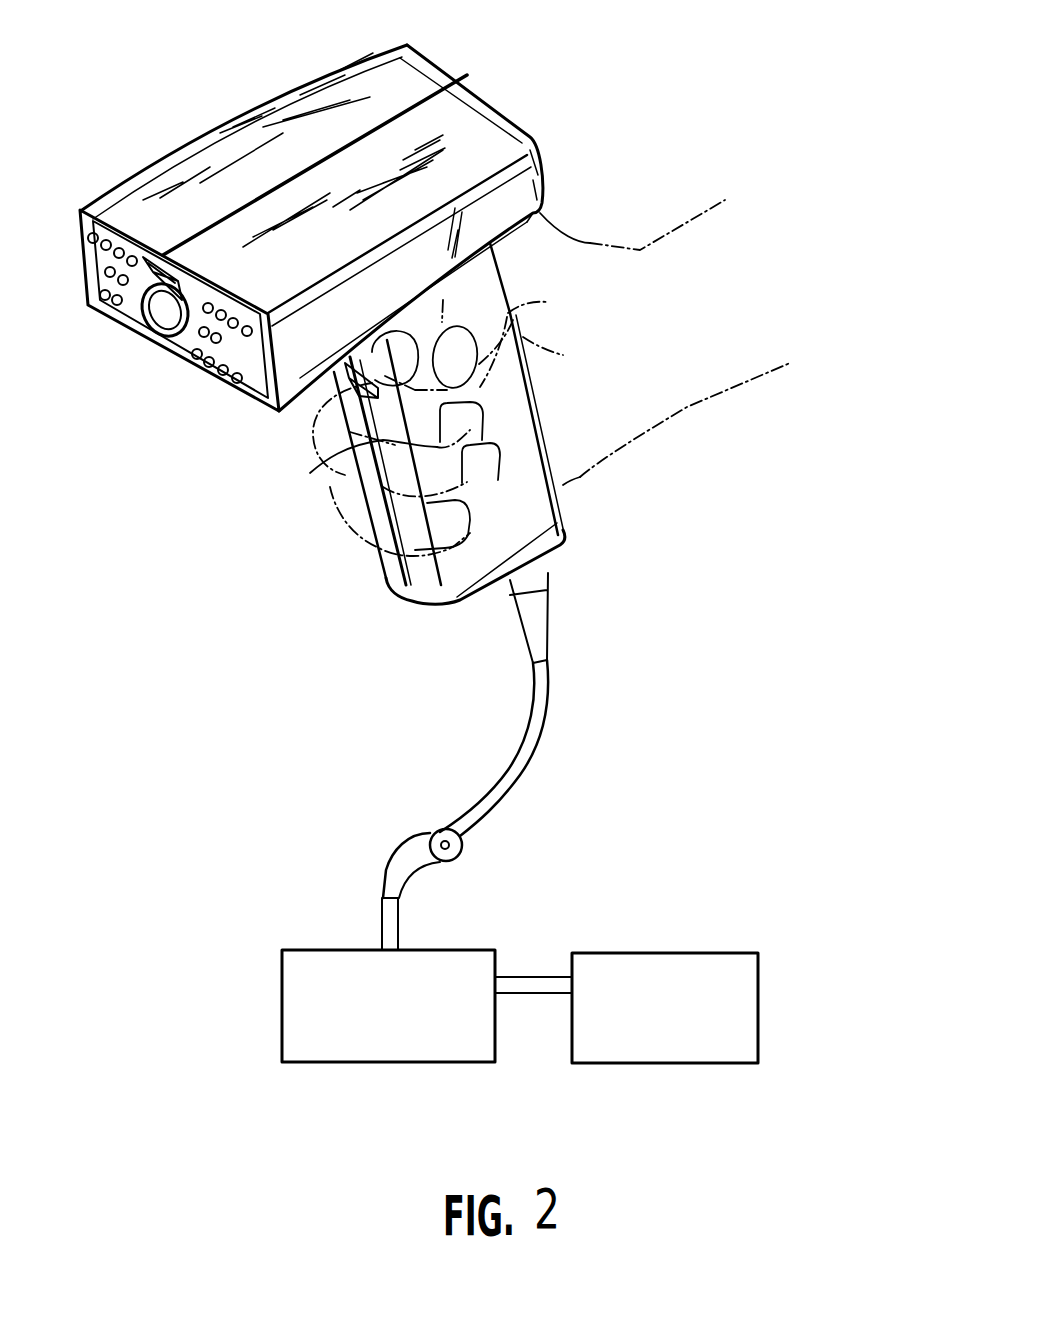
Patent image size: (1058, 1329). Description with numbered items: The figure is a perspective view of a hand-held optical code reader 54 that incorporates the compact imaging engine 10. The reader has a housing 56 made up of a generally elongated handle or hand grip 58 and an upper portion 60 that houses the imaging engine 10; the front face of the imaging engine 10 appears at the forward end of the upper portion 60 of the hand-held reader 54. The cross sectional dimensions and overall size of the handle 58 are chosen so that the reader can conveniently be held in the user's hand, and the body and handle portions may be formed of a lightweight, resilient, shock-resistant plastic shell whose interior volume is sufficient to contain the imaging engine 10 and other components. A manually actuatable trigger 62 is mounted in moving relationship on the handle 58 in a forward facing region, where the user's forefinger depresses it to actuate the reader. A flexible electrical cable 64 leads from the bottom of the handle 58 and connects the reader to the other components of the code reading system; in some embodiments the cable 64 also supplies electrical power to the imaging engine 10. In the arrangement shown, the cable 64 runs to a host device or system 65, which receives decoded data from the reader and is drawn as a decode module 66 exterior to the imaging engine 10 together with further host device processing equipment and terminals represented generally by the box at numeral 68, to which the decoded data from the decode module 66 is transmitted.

The imaging engine 10 is at (226, 391).
The hand-held reader 54 is at (498, 100).
The housing 56 is at (540, 165).
The handle 58 is at (567, 512).
The upper portion 60 is at (229, 120).
The trigger 62 is at (355, 470).
The flexible electrical cable 64 is at (552, 623).
The host device or system 65 is at (790, 1085).
The decode module 66 is at (485, 950).
The host device processing equipment and terminals 68 is at (722, 953).